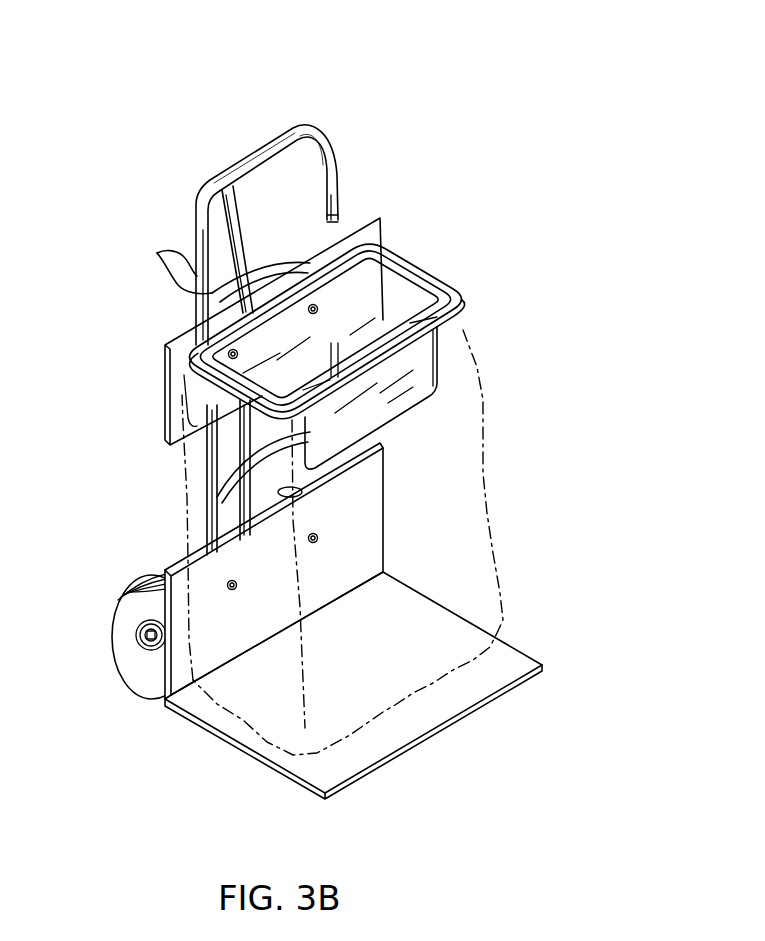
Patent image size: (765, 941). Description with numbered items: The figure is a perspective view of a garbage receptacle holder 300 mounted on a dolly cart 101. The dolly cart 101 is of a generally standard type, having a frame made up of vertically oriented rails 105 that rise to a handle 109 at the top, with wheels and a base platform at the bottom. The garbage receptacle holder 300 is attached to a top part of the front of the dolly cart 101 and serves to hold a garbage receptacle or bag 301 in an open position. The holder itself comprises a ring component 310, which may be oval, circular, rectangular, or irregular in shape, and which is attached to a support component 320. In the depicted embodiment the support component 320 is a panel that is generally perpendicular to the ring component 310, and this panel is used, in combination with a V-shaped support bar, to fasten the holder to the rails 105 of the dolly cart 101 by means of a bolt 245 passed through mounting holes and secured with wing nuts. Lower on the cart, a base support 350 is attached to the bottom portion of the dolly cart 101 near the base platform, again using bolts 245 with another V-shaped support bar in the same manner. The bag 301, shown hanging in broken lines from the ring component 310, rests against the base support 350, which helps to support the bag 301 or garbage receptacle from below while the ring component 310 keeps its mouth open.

The garbage receptacle holder 300 is at (406, 142).
The dolly cart 101 is at (207, 487).
The vertically oriented rails 105 is at (383, 197).
The handle 109 is at (220, 172).
The bolt 245 is at (229, 352).
The garbage receptacle or bag 301 is at (485, 443).
The ring component 310 is at (417, 257).
The support component 320 is at (193, 398).
The base support 350 is at (223, 740).